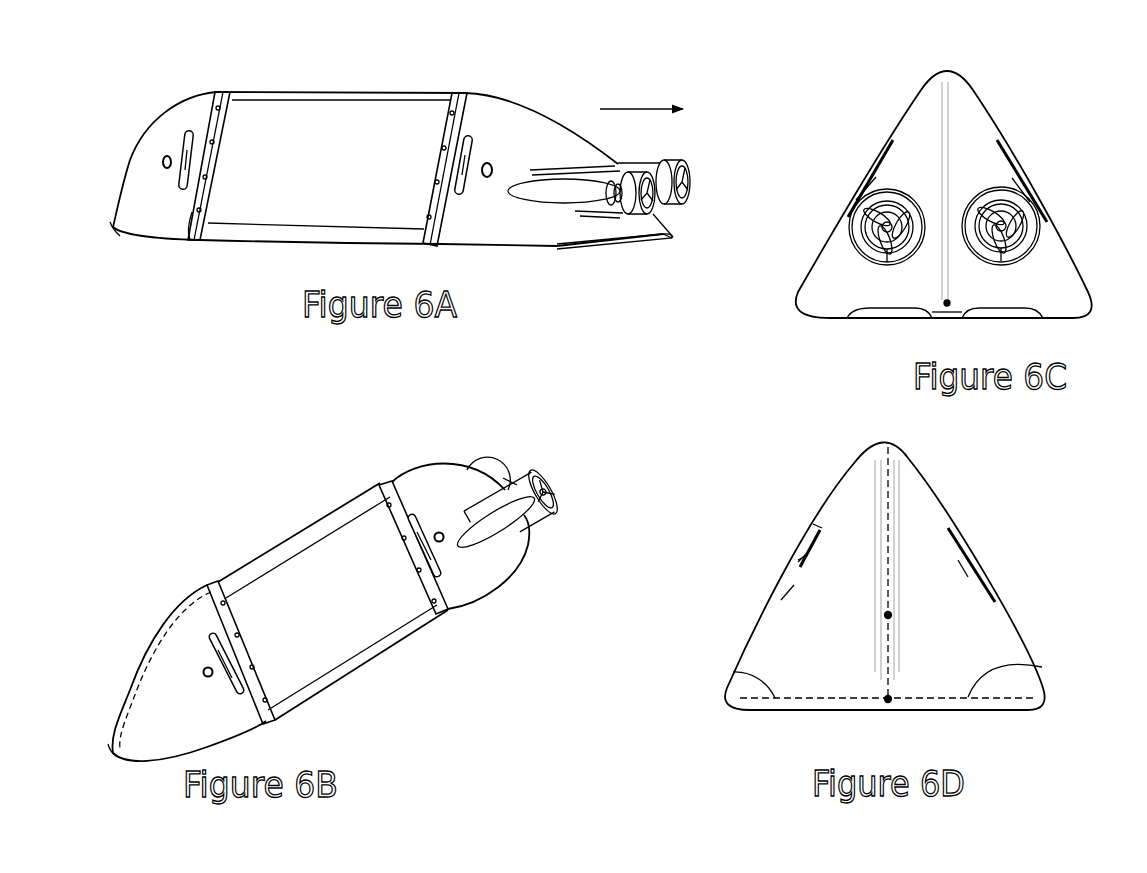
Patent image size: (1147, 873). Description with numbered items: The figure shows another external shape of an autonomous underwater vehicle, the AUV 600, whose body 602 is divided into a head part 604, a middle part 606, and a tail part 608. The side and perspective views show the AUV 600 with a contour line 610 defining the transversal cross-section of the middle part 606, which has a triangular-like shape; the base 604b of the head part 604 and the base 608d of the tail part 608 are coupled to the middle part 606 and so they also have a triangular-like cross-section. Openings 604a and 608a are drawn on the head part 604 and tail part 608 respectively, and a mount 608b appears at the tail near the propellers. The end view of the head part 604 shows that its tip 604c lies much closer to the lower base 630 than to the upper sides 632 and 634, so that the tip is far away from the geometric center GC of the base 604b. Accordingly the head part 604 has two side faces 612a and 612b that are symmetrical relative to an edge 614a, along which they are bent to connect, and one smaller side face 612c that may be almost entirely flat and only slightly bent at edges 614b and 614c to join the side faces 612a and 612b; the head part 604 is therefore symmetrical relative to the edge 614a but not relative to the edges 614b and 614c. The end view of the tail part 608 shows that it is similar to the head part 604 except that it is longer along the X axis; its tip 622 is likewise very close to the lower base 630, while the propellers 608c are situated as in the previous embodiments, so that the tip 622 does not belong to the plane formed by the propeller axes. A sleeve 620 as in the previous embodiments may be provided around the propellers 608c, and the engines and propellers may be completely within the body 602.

In FIG. 6A, the AUV 600 is at (364, 61).
In FIG. 6A, the body 602 is at (417, 82).
In FIG. 6A, the head part 604 is at (180, 110).
In FIG. 6B, the head part 604 is at (165, 650).
In FIG. 6A, the front nose opening 604a is at (162, 163).
In FIG. 6B, the front nose opening 604a is at (208, 672).
In FIG. 6D, the front nose opening 604a is at (805, 563).
In FIG. 6A, the base of the head part 604b is at (192, 214).
In FIG. 6A, the tip of the head part 604c is at (113, 228).
In FIG. 6B, the tip of the head part 604c is at (112, 750).
In FIG. 6D, the tip of the head part 604c is at (887, 701).
In FIG. 6A, the middle part 606 is at (273, 115).
In FIG. 6B, the middle part 606 is at (280, 560).
In FIG. 6A, the tail part 608 is at (523, 132).
In FIG. 6B, the tail part 608 is at (423, 488).
In FIG. 6A, the rear nose opening 608a is at (484, 163).
In FIG. 6B, the rear nose opening 608a is at (440, 532).
In FIG. 6A, the propeller mount 608b is at (583, 197).
In FIG. 6C, the propeller mount 608b is at (870, 243).
In FIG. 6C, the propellers 608c is at (867, 223).
In FIG. 6B, the propellers 608c is at (513, 516).
In FIG. 6A, the base of the tail part 608d is at (432, 204).
In FIG. 6B, the base of the tail part 608d is at (433, 604).
In FIG. 6D, the base of the tail part 608d is at (933, 482).
In FIG. 6A, the contour line 610 is at (205, 203).
In FIG. 6D, the contour line 610 is at (840, 487).
In FIG. 6D, the first side face 612a is at (817, 533).
In FIG. 6D, the second side face 612b is at (937, 515).
In FIG. 6D, the third side face 612c is at (903, 713).
In FIG. 6B, the edge 614a is at (142, 678).
In FIG. 6D, the edge 614a is at (889, 553).
In FIG. 6D, the edge 614b is at (774, 695).
In FIG. 6D, the edge 614c is at (1010, 660).
In FIG. 6A, the sleeve 620 is at (686, 170).
In FIG. 6C, the sleeve 620 is at (1023, 204).
In FIG. 6B, the sleeve 620 is at (556, 484).
In FIG. 6A, the tip of the tail part 622 is at (673, 237).
In FIG. 6C, the tip of the tail part 622 is at (948, 305).
In FIG. 6C, the lower base 630 is at (868, 323).
In FIG. 6D, the lower base 630 is at (740, 712).
In FIG. 6C, the upper side 632 is at (883, 138).
In FIG. 6D, the upper side 632 is at (758, 575).
In FIG. 6C, the upper side 634 is at (1010, 132).
In FIG. 6D, the upper side 634 is at (1027, 618).
In FIG. 6D, the geometric center GC is at (889, 615).